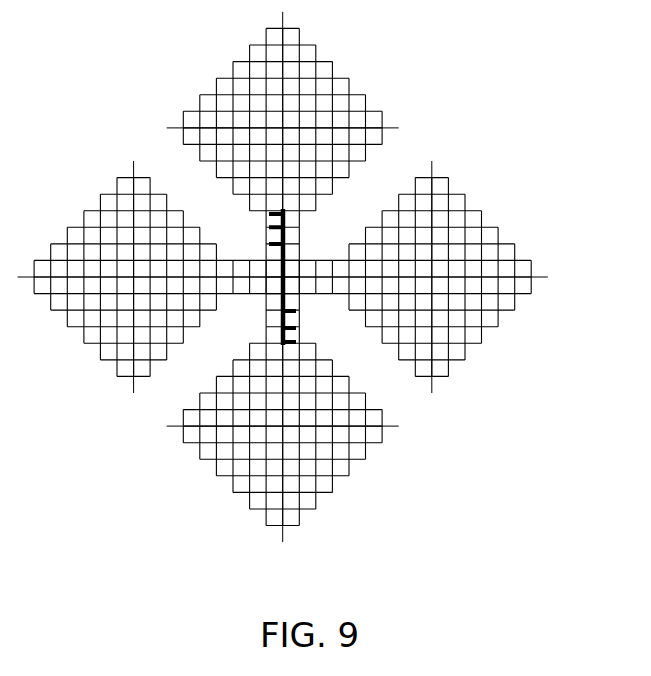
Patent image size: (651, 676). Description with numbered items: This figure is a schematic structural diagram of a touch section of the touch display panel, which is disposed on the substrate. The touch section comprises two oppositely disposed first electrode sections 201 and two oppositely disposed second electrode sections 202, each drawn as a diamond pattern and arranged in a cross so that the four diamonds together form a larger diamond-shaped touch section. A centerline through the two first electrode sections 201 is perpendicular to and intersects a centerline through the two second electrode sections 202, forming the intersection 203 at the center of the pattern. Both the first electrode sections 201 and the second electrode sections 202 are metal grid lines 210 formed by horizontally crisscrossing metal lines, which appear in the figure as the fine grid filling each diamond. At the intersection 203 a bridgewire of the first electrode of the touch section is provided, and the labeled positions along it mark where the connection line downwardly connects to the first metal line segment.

The metal grid line 210 is at (216, 81).
The first electrode section 201 is at (108, 340).
The second electrode section 202 is at (288, 512).
The intersection 203 is at (292, 218).